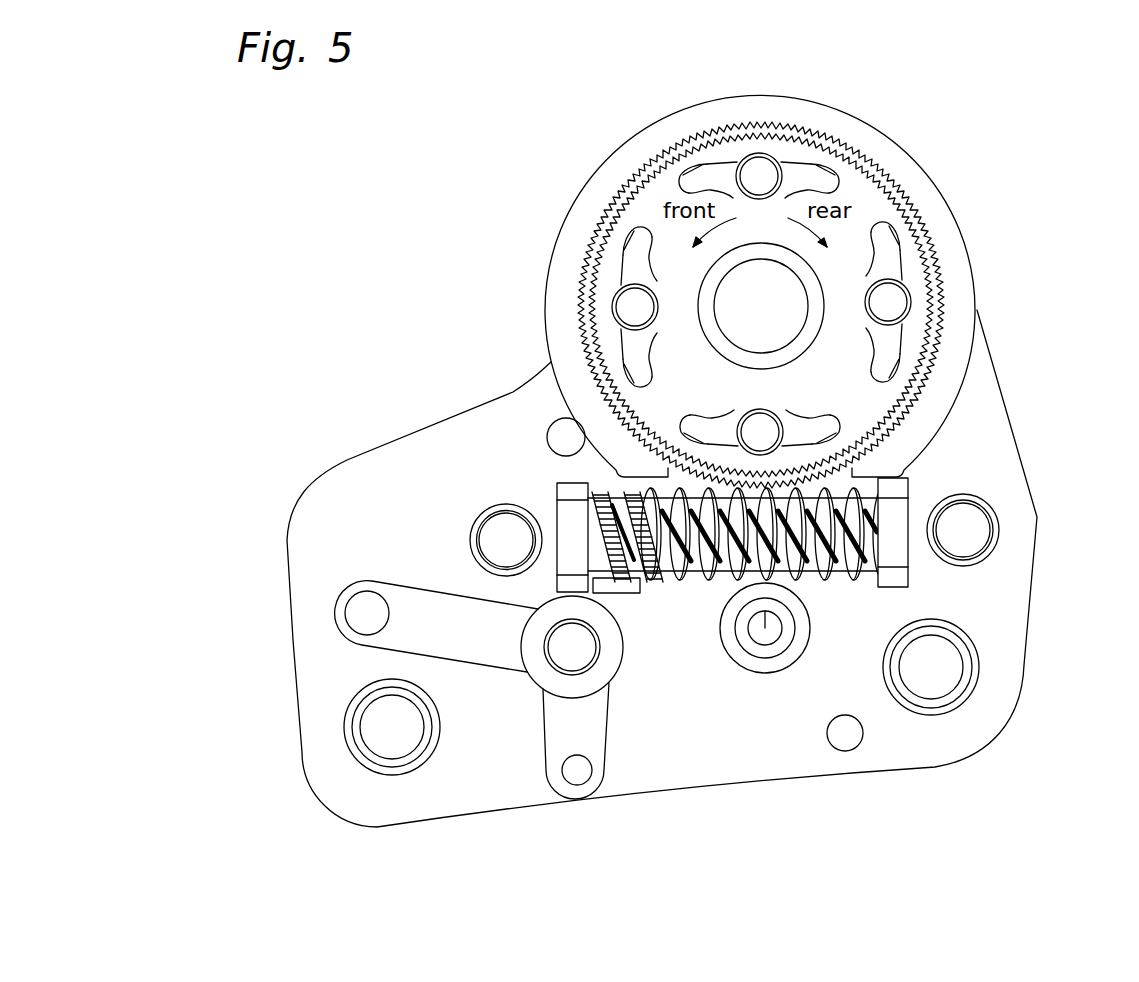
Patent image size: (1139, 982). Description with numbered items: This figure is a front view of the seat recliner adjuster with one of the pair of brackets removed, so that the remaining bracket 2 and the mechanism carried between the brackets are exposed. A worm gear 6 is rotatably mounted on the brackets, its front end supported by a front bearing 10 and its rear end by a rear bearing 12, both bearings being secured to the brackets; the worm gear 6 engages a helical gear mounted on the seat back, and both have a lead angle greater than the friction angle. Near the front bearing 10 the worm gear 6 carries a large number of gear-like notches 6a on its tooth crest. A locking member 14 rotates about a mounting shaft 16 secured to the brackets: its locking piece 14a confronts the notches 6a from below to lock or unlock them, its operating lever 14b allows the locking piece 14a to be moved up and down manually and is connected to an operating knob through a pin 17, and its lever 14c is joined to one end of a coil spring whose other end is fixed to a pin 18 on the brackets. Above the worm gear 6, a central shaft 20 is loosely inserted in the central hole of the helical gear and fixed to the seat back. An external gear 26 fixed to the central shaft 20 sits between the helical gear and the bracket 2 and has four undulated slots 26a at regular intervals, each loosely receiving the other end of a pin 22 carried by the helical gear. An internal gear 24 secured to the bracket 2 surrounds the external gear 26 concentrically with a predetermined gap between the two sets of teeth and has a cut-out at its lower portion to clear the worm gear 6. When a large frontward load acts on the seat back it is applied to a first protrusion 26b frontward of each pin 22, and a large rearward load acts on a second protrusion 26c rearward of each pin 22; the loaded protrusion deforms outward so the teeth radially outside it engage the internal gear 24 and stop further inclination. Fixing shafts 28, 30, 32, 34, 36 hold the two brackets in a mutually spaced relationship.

The bracket 2 is at (988, 432).
The worm gear 6 is at (883, 580).
The notches 6a is at (653, 598).
The front bearing 10 is at (573, 513).
The rear bearing 12 is at (945, 486).
The locking member 14 is at (533, 692).
The locking piece 14a is at (633, 617).
The operating lever 14b is at (407, 632).
The lever 14c is at (557, 745).
The mounting shaft 16 is at (547, 652).
The pin 17 is at (363, 610).
The pin 18 is at (848, 735).
The central shaft 20 is at (787, 318).
The pin 22 is at (756, 172).
The internal gear 24 is at (944, 218).
The external gear 26 is at (863, 200).
The undulated slots 26a is at (873, 187).
The first protrusion 26b is at (727, 170).
The second protrusion 26c is at (792, 170).
The fixing shaft 28 is at (932, 675).
The fixing shaft 30 is at (970, 530).
The fixing shaft 32 is at (378, 732).
The fixing shaft 34 is at (497, 532).
The fixing shaft 36 is at (768, 636).